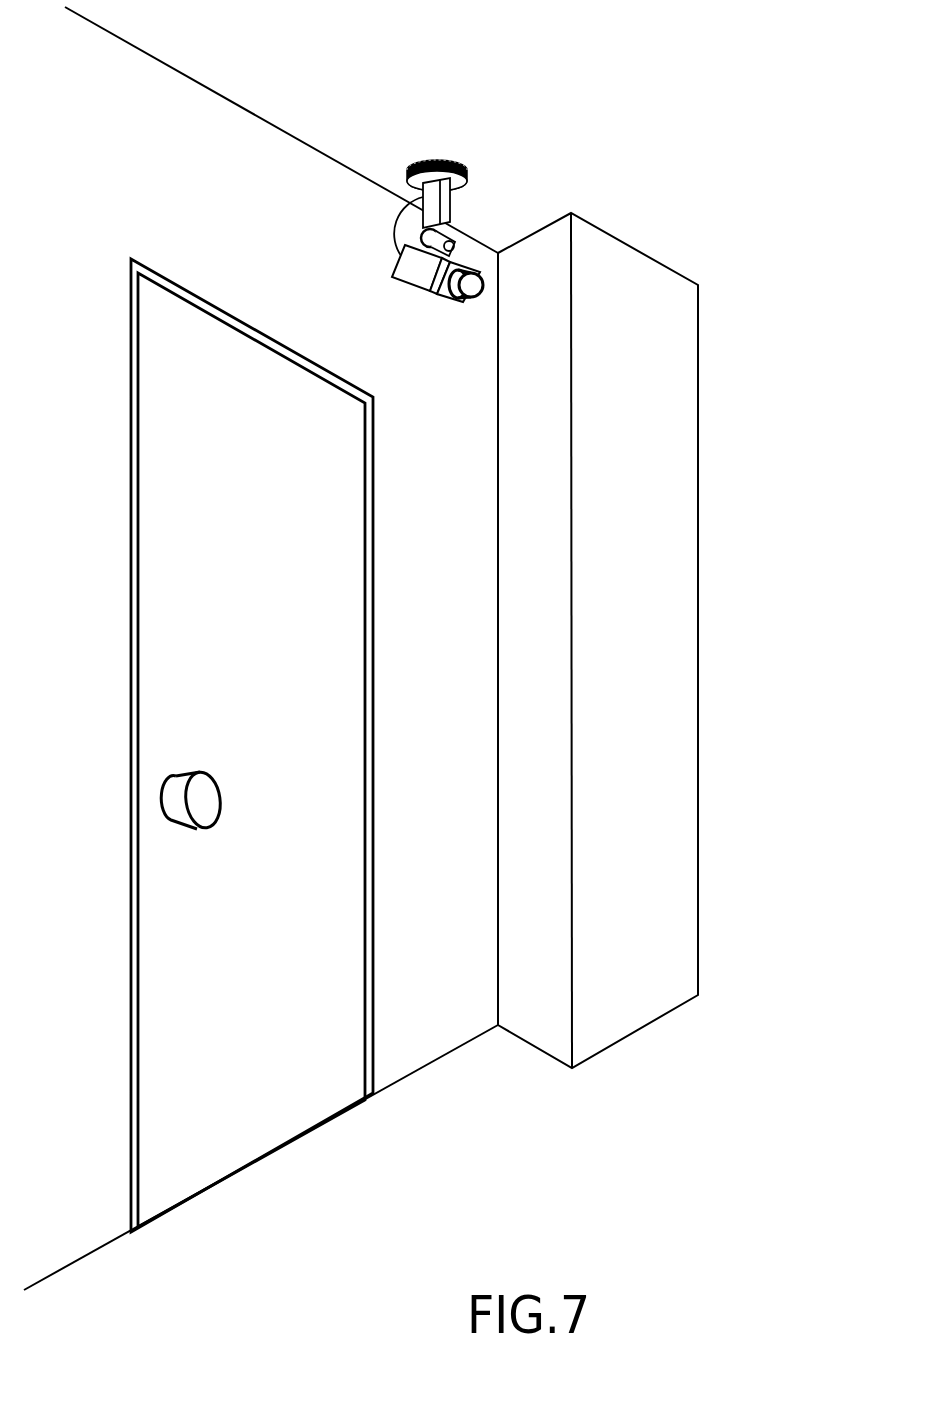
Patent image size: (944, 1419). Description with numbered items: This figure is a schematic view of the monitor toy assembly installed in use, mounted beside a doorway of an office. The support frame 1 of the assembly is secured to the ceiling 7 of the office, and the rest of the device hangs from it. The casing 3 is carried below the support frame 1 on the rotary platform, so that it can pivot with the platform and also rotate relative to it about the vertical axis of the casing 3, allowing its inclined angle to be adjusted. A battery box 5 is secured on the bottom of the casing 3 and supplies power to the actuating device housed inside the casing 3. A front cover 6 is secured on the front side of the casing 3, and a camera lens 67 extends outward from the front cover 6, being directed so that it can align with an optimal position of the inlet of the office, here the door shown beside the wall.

The support frame 1 is at (460, 206).
The casing 3 is at (415, 262).
The battery box 5 is at (405, 277).
The front cover 6 is at (450, 303).
The camera lens 67 is at (477, 297).
The ceiling 7 is at (292, 100).